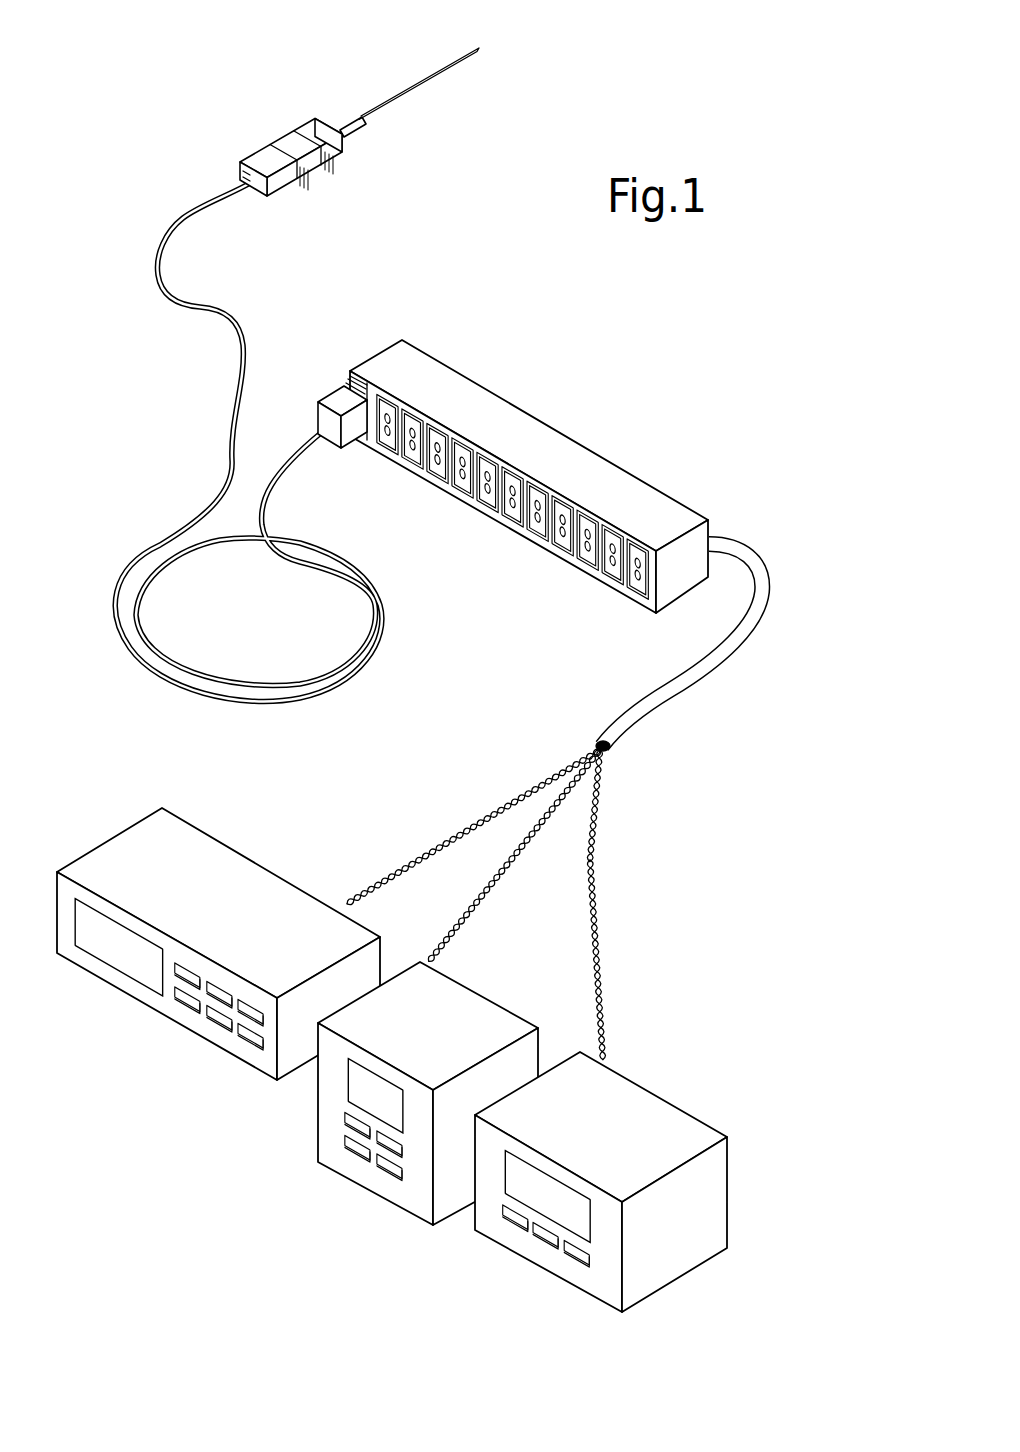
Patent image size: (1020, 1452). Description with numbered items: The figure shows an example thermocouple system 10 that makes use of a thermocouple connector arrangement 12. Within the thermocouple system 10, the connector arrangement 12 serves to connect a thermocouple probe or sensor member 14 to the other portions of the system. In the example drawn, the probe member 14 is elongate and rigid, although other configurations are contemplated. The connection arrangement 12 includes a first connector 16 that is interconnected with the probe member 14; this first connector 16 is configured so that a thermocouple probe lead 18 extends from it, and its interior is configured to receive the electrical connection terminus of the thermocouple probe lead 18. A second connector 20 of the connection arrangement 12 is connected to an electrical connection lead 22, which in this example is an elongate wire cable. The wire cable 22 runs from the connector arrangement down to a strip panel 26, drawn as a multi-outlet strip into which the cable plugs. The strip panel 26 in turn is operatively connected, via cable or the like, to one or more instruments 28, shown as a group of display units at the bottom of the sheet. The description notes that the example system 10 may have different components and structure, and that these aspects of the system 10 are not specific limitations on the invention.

The thermocouple system 10 is at (680, 349).
The thermocouple connector arrangement 12 is at (310, 115).
The thermocouple probe member 14 is at (425, 82).
The first connector 16 is at (315, 123).
The thermocouple probe lead 18 is at (330, 120).
The second connector 20 is at (272, 150).
The electrical connection lead 22 is at (232, 313).
The strip panel 26 is at (472, 392).
The instruments 28 is at (110, 1217).